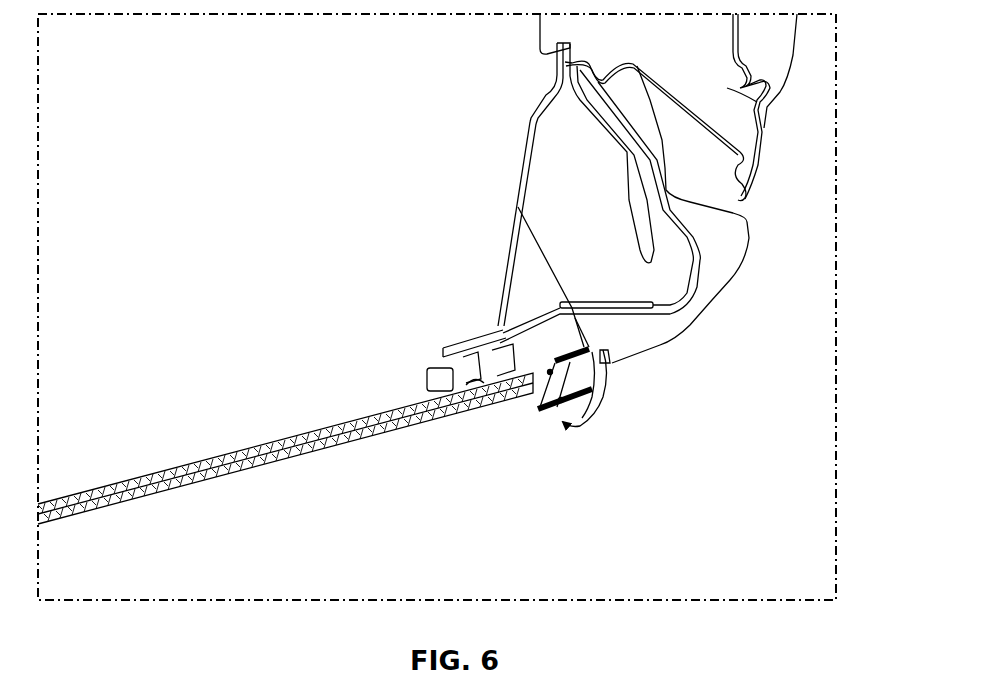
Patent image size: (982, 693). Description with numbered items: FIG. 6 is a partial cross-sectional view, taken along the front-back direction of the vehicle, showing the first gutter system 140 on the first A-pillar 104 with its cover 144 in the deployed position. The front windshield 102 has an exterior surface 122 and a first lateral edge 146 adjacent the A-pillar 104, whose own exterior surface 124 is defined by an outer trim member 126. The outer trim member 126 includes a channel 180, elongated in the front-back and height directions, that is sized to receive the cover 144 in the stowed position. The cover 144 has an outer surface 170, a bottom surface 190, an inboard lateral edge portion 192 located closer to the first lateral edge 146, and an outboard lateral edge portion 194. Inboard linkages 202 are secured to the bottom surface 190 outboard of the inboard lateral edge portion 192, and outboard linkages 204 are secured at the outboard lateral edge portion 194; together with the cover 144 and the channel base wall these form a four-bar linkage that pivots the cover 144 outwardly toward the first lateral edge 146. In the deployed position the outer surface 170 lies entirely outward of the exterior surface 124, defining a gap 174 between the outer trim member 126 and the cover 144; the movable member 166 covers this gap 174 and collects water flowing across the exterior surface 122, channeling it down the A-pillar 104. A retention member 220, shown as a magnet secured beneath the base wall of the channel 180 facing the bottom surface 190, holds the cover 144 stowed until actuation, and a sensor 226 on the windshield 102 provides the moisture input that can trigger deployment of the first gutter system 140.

The front windshield 102 is at (177, 494).
The first A-pillar 104 is at (750, 229).
The exterior surface of the windshield 122 is at (281, 464).
The exterior surface of the first A-pillar 124 is at (720, 296).
The outer trim member 126 is at (739, 268).
The first gutter system 140 is at (570, 436).
The cover 144 is at (548, 401).
The first lateral edge of the windshield 146 is at (490, 404).
The movable member 166 is at (547, 400).
The outer surface of the cover 170 is at (598, 418).
The gap 174 is at (603, 367).
The channel 180 is at (608, 350).
The bottom surface of the cover 190 is at (513, 320).
The inboard lateral edge portion 192 is at (540, 413).
The outboard lateral edge portion 194 is at (598, 378).
The inboard linkages 202 is at (490, 317).
The outboard linkages 204 is at (601, 352).
The retention member 220 is at (518, 207).
The sensor 226 is at (437, 367).